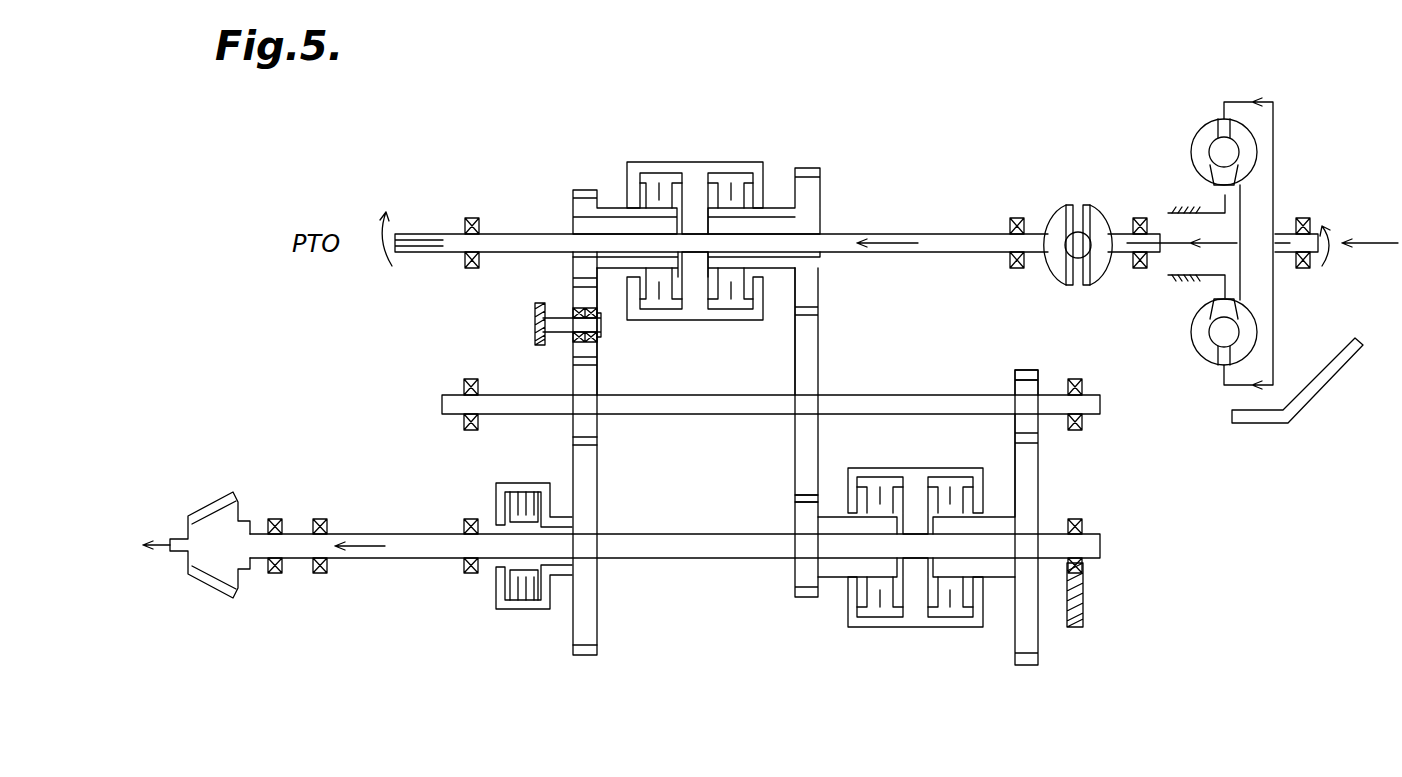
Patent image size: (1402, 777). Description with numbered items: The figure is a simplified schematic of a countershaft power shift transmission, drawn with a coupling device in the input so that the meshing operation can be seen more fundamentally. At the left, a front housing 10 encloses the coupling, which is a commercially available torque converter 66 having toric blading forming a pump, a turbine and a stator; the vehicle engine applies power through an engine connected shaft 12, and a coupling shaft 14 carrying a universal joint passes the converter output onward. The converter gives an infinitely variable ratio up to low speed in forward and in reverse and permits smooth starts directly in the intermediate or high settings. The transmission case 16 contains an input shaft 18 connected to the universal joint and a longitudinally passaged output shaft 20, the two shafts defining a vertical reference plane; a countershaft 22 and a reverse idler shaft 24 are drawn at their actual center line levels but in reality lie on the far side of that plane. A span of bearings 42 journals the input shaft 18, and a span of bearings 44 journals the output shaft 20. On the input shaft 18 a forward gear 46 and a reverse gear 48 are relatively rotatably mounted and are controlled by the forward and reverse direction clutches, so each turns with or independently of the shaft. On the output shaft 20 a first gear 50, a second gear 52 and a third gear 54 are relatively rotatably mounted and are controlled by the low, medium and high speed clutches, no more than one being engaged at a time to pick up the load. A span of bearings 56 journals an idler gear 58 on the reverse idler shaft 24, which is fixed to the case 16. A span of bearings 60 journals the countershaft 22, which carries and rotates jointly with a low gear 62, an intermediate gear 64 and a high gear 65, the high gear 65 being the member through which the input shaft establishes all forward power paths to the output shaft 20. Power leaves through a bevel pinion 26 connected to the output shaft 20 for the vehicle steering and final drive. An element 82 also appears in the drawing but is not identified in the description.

The front housing 10 is at (1312, 386).
The engine connected shaft 12 is at (1290, 225).
The coupling shaft 14 is at (1110, 236).
The transmission case 16 is at (535, 312).
The input shaft 18 is at (958, 205).
The output shaft 20 is at (677, 512).
The countershaft 22 is at (735, 397).
The reverse idler shaft 24 is at (545, 318).
The bevel pinion 26 is at (235, 500).
The span of bearings 42 is at (472, 218).
The span of bearings 44 is at (471, 518).
The forward gear 46 is at (815, 198).
The reverse gear 48 is at (573, 210).
The first gear 50 is at (1038, 458).
The second gear 52 is at (597, 478).
The third gear 54 is at (795, 505).
The span of bearings 56 is at (598, 340).
The idler gear 58 is at (573, 352).
The span of bearings 60 is at (480, 424).
The low gear 62 is at (1017, 378).
The intermediate gear 64 is at (598, 424).
The high gear 65 is at (818, 338).
The torque converter 66 is at (1212, 126).
The clutch 82 is at (918, 478).